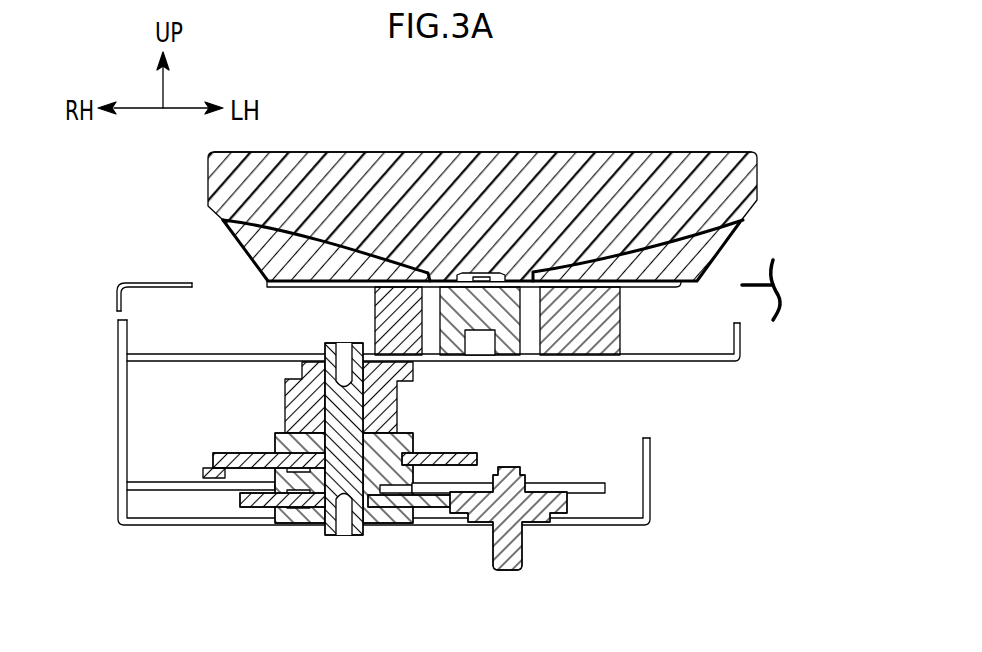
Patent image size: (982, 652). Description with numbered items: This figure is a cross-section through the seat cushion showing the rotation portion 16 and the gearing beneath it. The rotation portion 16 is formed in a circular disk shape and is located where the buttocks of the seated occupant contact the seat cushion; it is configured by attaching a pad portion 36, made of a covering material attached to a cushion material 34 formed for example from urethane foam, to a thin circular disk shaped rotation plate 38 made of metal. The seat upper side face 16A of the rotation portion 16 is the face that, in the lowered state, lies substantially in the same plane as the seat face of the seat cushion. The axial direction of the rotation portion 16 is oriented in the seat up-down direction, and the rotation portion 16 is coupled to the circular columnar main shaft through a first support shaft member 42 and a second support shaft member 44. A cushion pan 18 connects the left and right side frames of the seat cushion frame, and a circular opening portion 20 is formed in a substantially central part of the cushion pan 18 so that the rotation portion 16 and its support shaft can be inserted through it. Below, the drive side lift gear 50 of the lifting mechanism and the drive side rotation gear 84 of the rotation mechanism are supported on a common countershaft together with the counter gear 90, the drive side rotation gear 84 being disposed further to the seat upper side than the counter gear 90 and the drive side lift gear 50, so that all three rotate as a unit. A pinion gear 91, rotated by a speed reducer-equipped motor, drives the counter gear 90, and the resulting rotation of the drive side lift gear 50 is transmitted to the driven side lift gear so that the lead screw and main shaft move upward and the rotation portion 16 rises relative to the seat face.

The rotation portion 16 is at (494, 148).
The seat upper side face 16A is at (625, 150).
The cushion pan 18 is at (148, 282).
The opening portion 20 is at (741, 279).
The cushion material 34 is at (368, 158).
The pad portion 36 is at (483, 250).
The rotation plate 38 is at (300, 285).
The first support shaft member 42 is at (621, 313).
The second support shaft member 44 is at (521, 325).
The drive side lift gear 50 is at (228, 453).
The drive side rotation gear 84 is at (285, 383).
The counter gear 90 is at (258, 507).
The pinion gear 91 is at (567, 503).